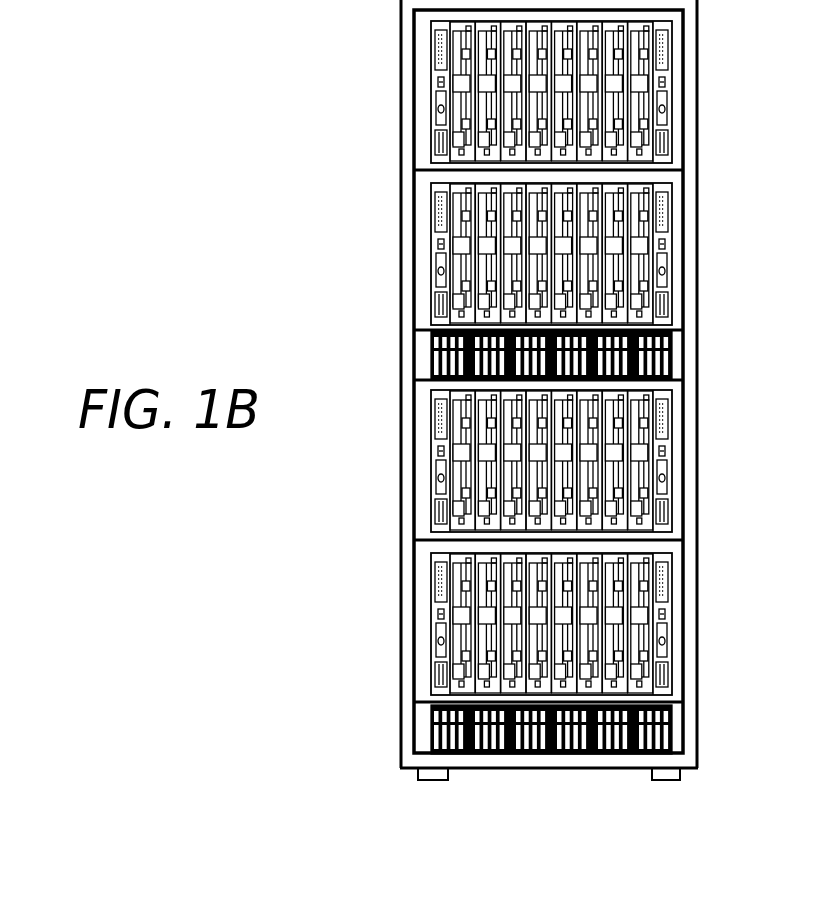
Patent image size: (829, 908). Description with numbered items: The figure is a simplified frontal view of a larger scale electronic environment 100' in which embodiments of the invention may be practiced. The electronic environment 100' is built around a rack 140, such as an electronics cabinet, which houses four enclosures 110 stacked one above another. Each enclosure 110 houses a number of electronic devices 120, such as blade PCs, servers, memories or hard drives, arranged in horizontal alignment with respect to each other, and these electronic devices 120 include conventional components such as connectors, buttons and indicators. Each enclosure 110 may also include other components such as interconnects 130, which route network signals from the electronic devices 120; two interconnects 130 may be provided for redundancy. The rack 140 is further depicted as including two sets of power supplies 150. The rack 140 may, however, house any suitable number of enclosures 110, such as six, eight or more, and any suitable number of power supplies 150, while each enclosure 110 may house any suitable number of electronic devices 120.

The electronic environment 100' is at (394, 390).
The rack 140 is at (403, 50).
The enclosure 110 is at (414, 110).
The electronic devices 120 is at (431, 495).
The interconnects 130 is at (431, 610).
The power supplies 150 is at (414, 360).